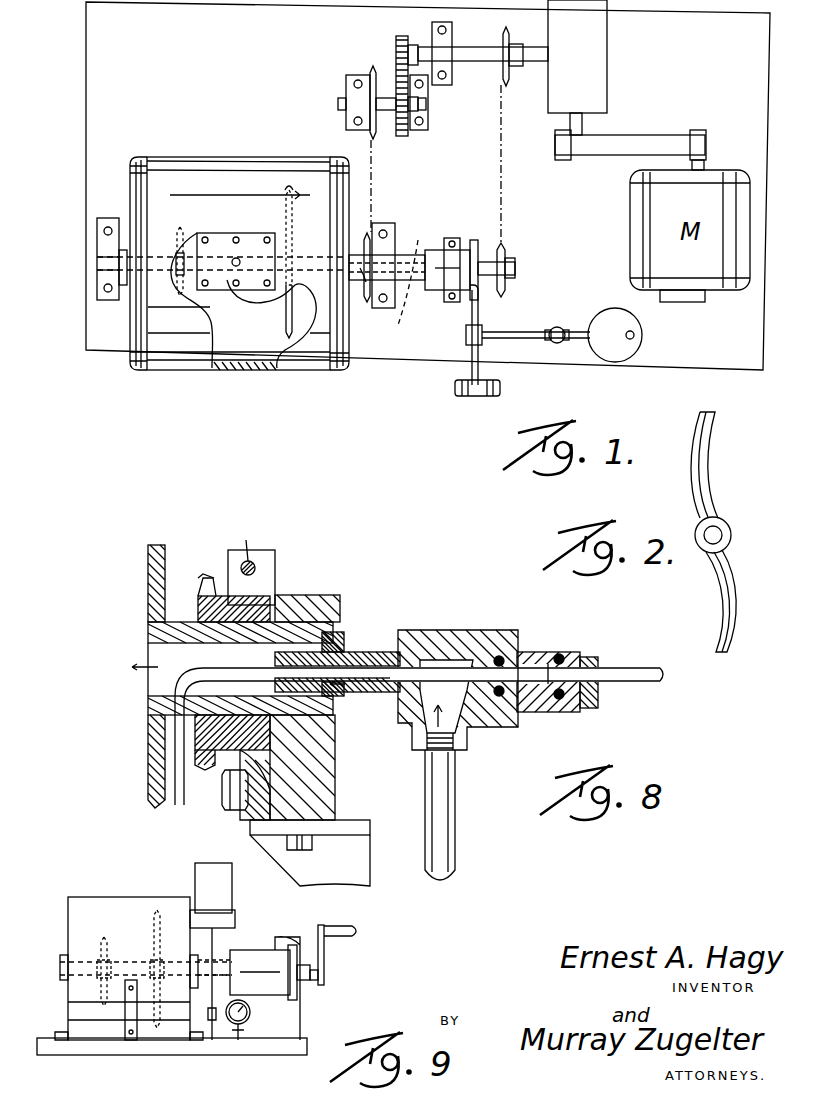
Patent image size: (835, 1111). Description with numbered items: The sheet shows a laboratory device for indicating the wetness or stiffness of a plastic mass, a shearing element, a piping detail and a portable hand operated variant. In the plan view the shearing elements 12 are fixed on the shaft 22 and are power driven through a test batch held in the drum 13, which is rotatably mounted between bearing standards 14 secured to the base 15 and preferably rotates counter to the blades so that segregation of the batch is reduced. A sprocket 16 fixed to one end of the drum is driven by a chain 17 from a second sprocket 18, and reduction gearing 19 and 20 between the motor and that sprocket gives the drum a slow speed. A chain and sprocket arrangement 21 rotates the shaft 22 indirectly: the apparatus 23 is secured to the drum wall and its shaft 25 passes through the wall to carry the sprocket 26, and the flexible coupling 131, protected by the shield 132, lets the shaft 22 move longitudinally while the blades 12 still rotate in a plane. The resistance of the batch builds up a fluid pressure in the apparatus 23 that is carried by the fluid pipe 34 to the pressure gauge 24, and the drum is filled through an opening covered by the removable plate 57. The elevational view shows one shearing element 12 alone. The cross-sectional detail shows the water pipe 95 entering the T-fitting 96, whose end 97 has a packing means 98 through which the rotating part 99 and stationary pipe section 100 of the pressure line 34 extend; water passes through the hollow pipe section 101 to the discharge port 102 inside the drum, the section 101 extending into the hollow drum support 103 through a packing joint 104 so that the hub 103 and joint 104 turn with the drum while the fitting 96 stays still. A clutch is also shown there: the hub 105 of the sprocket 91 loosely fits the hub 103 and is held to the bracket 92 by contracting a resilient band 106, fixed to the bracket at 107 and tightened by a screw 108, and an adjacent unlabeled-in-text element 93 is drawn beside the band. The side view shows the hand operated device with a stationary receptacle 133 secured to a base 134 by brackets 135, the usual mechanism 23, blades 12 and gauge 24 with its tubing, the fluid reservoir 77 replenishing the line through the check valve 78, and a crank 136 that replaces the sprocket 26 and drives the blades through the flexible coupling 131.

In FIG. 1, the shearing elements 12 is at (185, 275).
In FIG. 2, the shearing elements 12 is at (704, 482).
In FIG. 9, the shearing elements 12 is at (142, 940).
In FIG. 1, the drum 13 is at (293, 370).
In FIG. 1, the bearing standards 14 is at (103, 218).
In FIG. 1, the base 15 is at (86, 152).
In FIG. 1, the sprocket 16 is at (369, 225).
In FIG. 1, the chain 17 is at (372, 175).
In FIG. 1, the second sprocket 18 is at (372, 70).
In FIG. 1, the reduction gearing 19 is at (546, 112).
In FIG. 1, the reduction gearing 20 is at (405, 135).
In FIG. 1, the chain and sprocket arrangement 21 is at (503, 225).
In FIG. 1, the shaft 22 is at (325, 248).
In FIG. 1, the apparatus 23 is at (436, 290).
In FIG. 9, the apparatus 23 is at (255, 950).
In FIG. 1, the pressure gauge 24 is at (459, 399).
In FIG. 9, the pressure gauge 24 is at (249, 1020).
In FIG. 1, the shaft 25 is at (488, 262).
In FIG. 1, the sprocket 26 is at (505, 258).
In FIG. 1, the fluid pipe 34 is at (480, 312).
In FIG. 8, the fluid pipe 34 is at (456, 667).
In FIG. 1, the removable plate 57 is at (222, 283).
In FIG. 9, the fluid reservoir 77 is at (232, 890).
In FIG. 9, the check valve 78 is at (219, 1020).
In FIG. 8, the sprocket 91 is at (198, 596).
In FIG. 8, the bracket 92 is at (360, 862).
In FIG. 8, the block 93 is at (268, 578).
In FIG. 8, the water pipe 95 is at (455, 805).
In FIG. 8, the T-fitting 96 is at (500, 727).
In FIG. 8, the end of the fitting 97 is at (520, 712).
In FIG. 8, the packing means 98 is at (500, 655).
In FIG. 8, the rotating part 99 is at (530, 660).
In FIG. 8, the stationary pipe section 100 is at (548, 652).
In FIG. 8, the hollow pipe section 101 is at (385, 652).
In FIG. 8, the discharge port 102 is at (150, 690).
In FIG. 8, the hollow drum support 103 is at (148, 608).
In FIG. 8, the packing joint 104 is at (340, 630).
In FIG. 8, the hub 105 is at (228, 598).
In FIG. 8, the resilient band 106 is at (268, 553).
In FIG. 8, the band fixing point 107 is at (262, 795).
In FIG. 8, the screw 108 is at (246, 540).
In FIG. 1, the flexible coupling 131 is at (401, 295).
In FIG. 9, the flexible coupling 131 is at (218, 960).
In FIG. 1, the shield 132 is at (375, 300).
In FIG. 9, the stationary receptacle 133 is at (83, 915).
In FIG. 9, the base 134 is at (68, 1055).
In FIG. 9, the brackets 135 is at (126, 1020).
In FIG. 9, the crank 136 is at (324, 950).